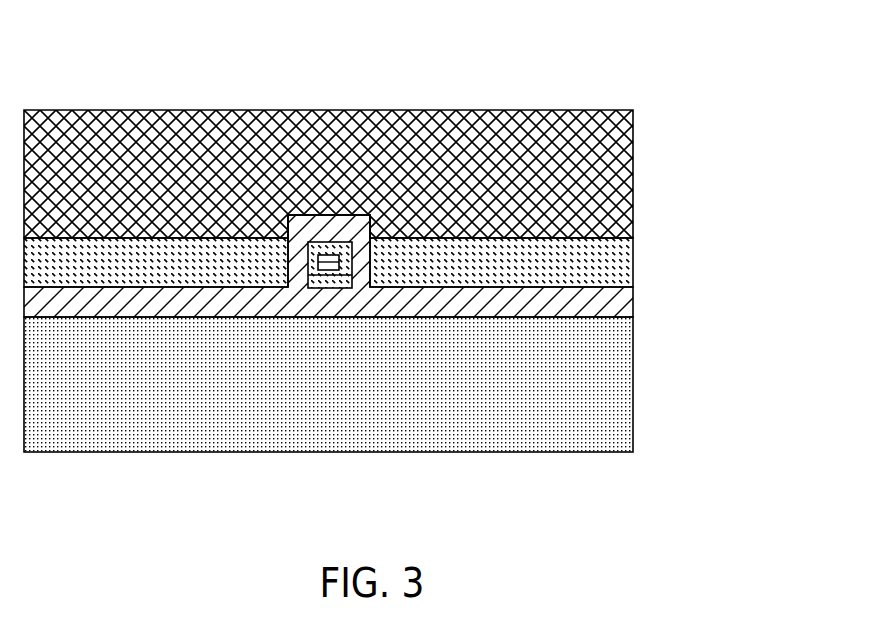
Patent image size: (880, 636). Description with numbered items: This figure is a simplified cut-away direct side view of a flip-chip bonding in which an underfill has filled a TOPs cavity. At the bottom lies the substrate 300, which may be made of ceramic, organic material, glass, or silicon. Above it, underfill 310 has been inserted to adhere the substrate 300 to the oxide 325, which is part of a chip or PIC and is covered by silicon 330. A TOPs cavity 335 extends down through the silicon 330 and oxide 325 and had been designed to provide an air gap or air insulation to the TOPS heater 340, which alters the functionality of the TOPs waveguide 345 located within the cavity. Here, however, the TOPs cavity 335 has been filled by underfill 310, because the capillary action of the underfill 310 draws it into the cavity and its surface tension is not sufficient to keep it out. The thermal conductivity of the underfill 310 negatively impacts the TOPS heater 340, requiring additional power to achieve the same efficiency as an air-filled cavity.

The substrate 300 is at (627, 377).
The underfill 310 is at (627, 303).
The oxide 325 is at (627, 243).
The silicon 330 is at (627, 160).
The TOPs cavity 335 is at (302, 223).
The TOPs heater 340 is at (328, 253).
The TOPs waveguide 345 is at (340, 245).